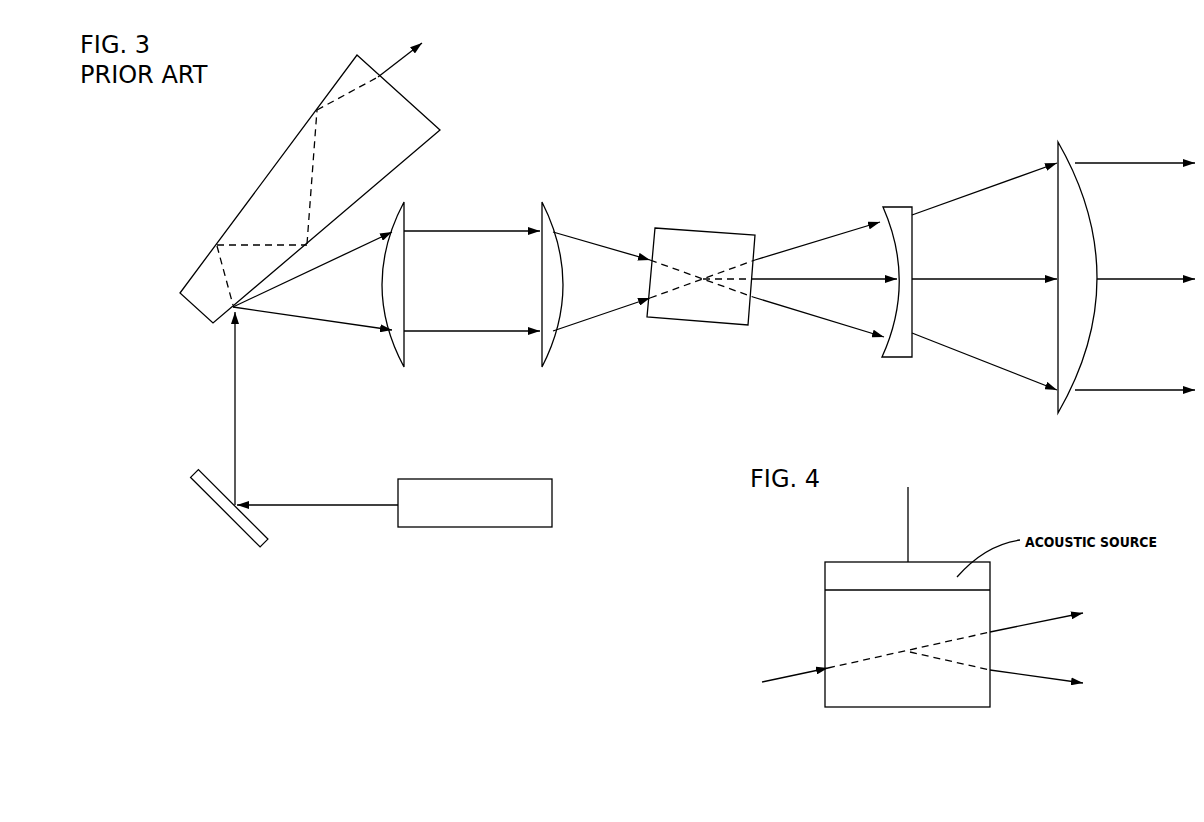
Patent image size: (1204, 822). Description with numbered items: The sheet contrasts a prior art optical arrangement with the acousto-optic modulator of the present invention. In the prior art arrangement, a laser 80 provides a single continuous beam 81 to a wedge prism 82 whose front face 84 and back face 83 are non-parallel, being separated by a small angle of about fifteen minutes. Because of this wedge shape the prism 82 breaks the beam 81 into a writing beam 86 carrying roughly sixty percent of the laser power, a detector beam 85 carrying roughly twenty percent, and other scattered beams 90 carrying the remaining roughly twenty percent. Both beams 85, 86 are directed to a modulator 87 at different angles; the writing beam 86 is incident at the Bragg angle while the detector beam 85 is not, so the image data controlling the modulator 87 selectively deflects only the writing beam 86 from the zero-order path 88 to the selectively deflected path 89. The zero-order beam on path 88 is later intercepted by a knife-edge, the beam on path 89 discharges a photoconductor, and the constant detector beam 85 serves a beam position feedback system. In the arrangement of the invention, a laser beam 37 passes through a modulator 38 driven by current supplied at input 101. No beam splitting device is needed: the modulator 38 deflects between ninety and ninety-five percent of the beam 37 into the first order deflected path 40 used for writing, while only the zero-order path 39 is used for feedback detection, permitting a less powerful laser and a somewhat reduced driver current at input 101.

In FIG. 3, the laser 80 is at (442, 478).
In FIG. 3, the continuous beam 81 is at (237, 438).
In FIG. 3, the wedge prism 82 is at (215, 177).
In FIG. 3, the back face 83 is at (223, 322).
In FIG. 3, the front face 84 is at (200, 268).
In FIG. 3, the detector beam 85 is at (357, 327).
In FIG. 3, the writing beam 86 is at (353, 237).
In FIG. 3, the modulator 87 is at (690, 213).
In FIG. 3, the zero-order path 88 is at (1108, 390).
In FIG. 3, the selectively deflected path 89 is at (1117, 277).
In FIG. 3, the scattered beams 90 is at (395, 65).
In FIG. 4, the laser beam 37 is at (793, 672).
In FIG. 4, the modulator 38 is at (878, 710).
In FIG. 4, the zero-order path 39 is at (1017, 623).
In FIG. 4, the deflected path 40 is at (1035, 678).
In FIG. 4, the input 101 is at (908, 517).